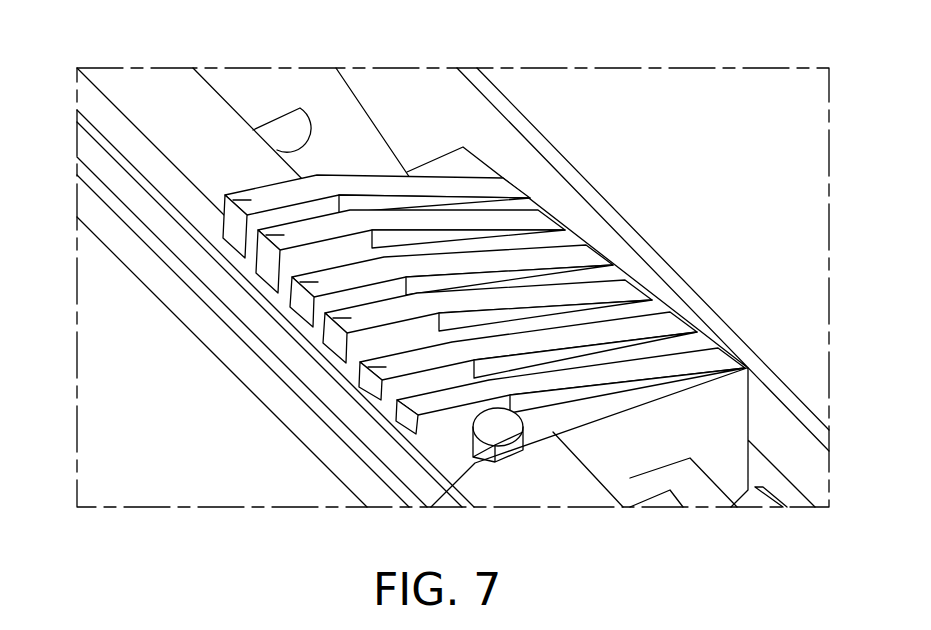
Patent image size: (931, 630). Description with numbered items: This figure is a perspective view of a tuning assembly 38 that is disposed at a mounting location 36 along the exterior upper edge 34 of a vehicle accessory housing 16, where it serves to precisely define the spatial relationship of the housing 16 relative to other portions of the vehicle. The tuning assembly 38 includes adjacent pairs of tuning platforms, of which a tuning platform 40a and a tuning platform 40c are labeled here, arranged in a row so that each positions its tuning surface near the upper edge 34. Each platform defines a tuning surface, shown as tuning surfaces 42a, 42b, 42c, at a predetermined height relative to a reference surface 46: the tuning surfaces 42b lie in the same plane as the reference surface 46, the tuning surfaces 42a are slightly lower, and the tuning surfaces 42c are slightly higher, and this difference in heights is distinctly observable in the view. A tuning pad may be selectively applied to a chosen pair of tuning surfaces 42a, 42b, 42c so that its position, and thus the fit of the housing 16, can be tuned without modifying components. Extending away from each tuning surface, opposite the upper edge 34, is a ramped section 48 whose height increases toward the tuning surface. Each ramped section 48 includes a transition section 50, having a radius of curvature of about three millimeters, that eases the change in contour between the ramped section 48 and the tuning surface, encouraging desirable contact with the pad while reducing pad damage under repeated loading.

The housing 16 is at (158, 88).
The upper edge 34 is at (107, 182).
The mounting location 36 is at (463, 147).
The tuning assembly 38 is at (263, 112).
The tuning platform 40a is at (457, 423).
The tuning platform 40c is at (316, 222).
The tuning surface 42a is at (375, 368).
The tuning surface 42b is at (303, 290).
The tuning surface 42c is at (247, 200).
The reference surface 46 is at (490, 432).
The ramped section 48 is at (393, 163).
The transition section 50 is at (424, 332).